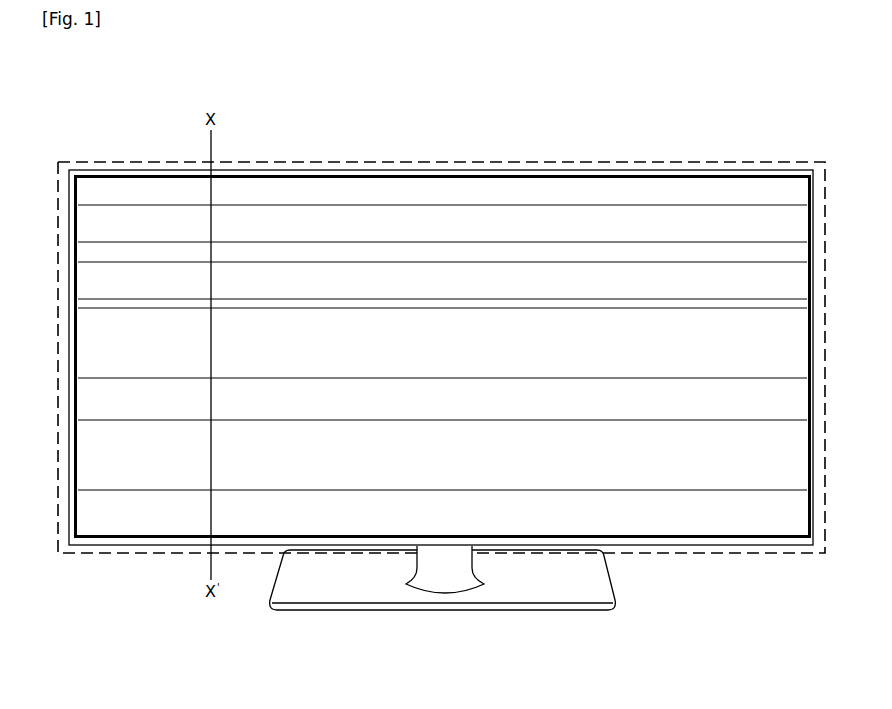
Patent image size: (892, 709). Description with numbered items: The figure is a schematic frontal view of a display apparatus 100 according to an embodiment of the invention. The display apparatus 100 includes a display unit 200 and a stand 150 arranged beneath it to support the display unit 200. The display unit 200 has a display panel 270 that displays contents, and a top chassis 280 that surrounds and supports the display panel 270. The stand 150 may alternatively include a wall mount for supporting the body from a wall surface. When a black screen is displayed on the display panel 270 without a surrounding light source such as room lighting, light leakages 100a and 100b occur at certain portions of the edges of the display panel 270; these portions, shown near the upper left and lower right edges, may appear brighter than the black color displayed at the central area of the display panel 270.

The display apparatus 100 is at (584, 133).
The light leakage 100a is at (205, 180).
The light leakage 100b is at (683, 533).
The stand 150 is at (314, 600).
The display unit 200 is at (660, 163).
The display panel 270 is at (368, 207).
The top chassis 280 is at (465, 171).